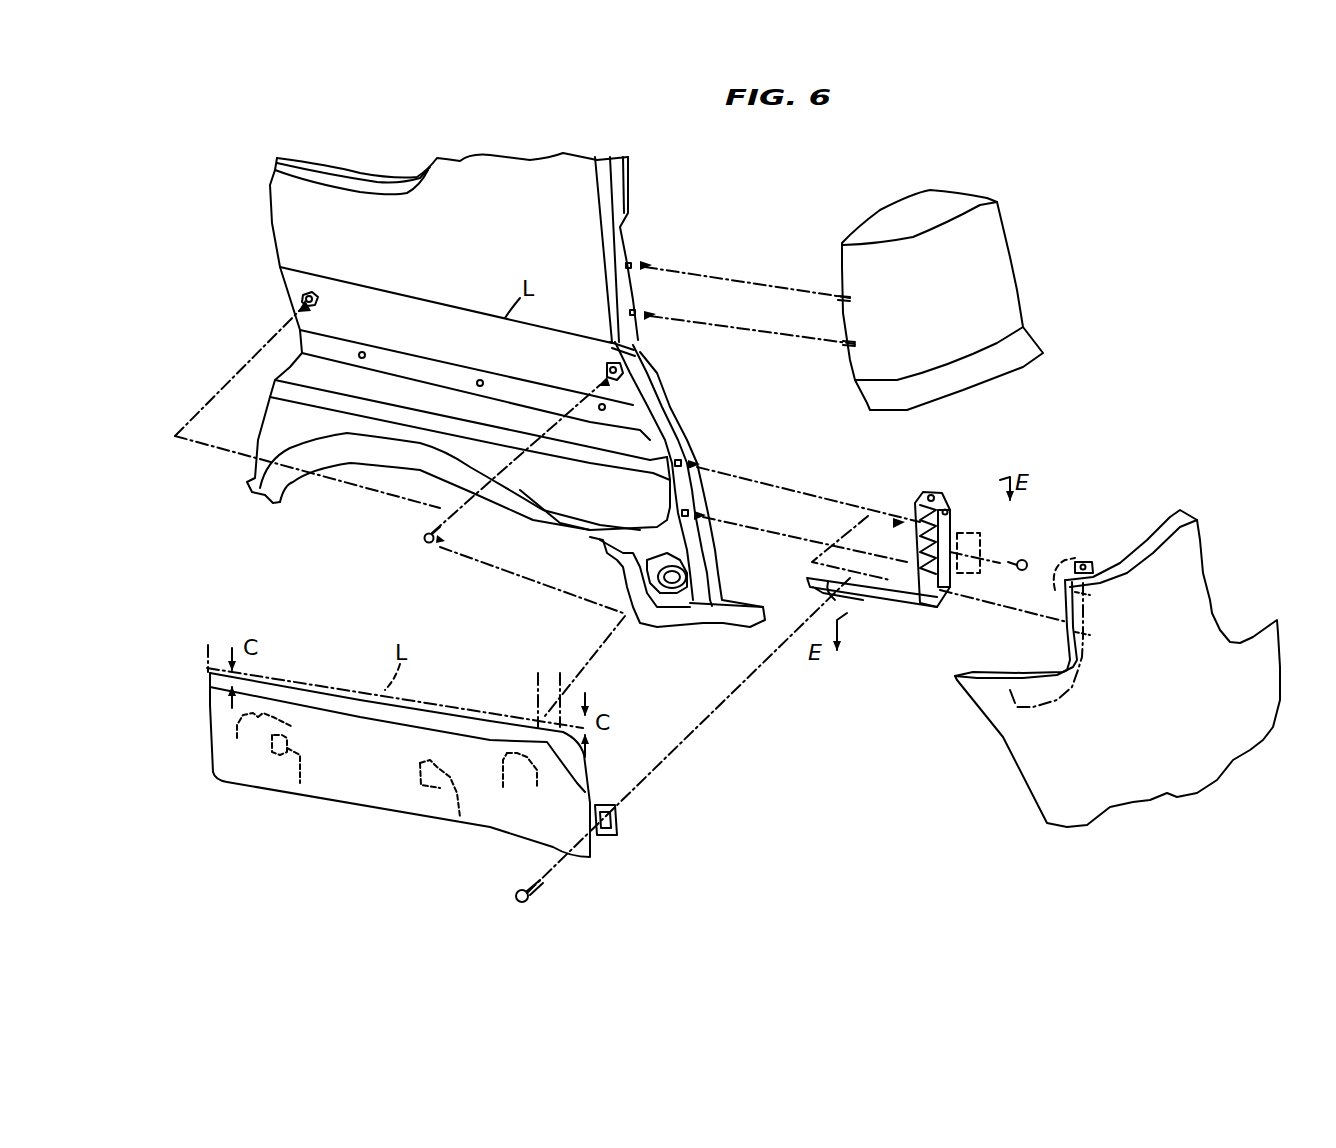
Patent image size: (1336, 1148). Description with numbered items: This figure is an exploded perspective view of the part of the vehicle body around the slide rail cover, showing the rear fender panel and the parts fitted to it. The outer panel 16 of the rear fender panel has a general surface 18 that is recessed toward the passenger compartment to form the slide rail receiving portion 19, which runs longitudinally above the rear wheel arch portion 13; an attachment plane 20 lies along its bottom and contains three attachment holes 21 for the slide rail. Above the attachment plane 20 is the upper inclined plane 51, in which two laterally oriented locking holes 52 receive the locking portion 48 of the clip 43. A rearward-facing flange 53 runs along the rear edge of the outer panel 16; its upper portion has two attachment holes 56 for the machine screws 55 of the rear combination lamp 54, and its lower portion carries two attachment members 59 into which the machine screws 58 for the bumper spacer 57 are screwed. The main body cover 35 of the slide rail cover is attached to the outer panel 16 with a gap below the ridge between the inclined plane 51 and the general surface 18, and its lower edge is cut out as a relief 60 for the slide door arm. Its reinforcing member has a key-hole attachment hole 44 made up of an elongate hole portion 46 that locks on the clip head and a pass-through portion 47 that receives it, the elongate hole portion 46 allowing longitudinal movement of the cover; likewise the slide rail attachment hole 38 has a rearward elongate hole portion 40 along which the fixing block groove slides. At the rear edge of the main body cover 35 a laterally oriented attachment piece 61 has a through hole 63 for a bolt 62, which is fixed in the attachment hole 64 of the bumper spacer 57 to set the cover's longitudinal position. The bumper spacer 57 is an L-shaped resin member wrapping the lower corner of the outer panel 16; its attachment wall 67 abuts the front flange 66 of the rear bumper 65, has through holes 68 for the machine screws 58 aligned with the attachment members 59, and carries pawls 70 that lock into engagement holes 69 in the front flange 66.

The outer panel 16 is at (573, 203).
The general surface 18 is at (527, 237).
The upper inclined plane 51 is at (418, 305).
The attachment plane 20 is at (440, 378).
The attachment holes 21 is at (365, 352).
The locking holes 52 is at (318, 293).
The flange 53 is at (628, 250).
The attachment holes 56 is at (636, 313).
The slide rail receiving portion 19 is at (590, 357).
The attachment members 59 is at (690, 513).
The rear wheel arch portion 13 is at (373, 465).
The locking portion 48 is at (436, 537).
The clip 43 is at (427, 550).
The rear combination lamp 54 is at (1005, 296).
The machine screws 55 is at (842, 345).
The bumper spacer 57 is at (931, 488).
The attachment hole 64 is at (922, 495).
The attachment wall 67 is at (947, 508).
The through holes 68 is at (952, 570).
The pawls 70 is at (903, 600).
The machine screws 58 is at (1042, 566).
The rear bumper 65 is at (1165, 512).
The front flange 66 is at (1066, 556).
The engagement holes 69 is at (1095, 633).
The relief 60 is at (365, 822).
The main body cover 35 is at (585, 795).
The attachment piece 61 is at (617, 818).
The through hole 63 is at (615, 830).
The bolt 62 is at (533, 893).
The attachment hole 44 is at (258, 713).
The elongate hole portion 46 is at (540, 795).
The pass-through portion 47 is at (368, 761).
The elongate hole portion 40 is at (378, 791).
The slide rail attachment hole 38 is at (277, 765).